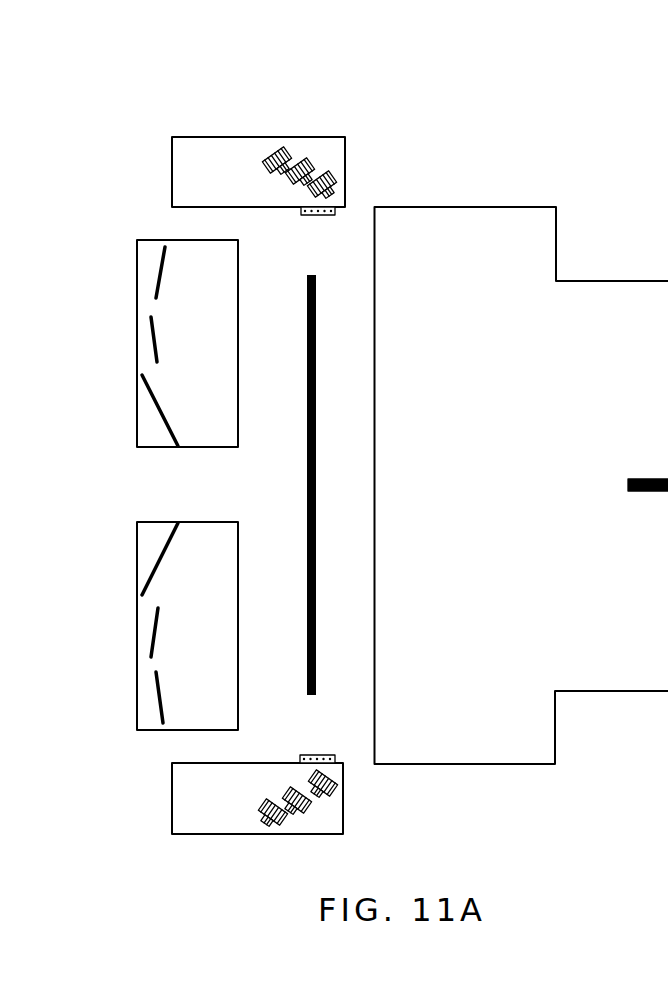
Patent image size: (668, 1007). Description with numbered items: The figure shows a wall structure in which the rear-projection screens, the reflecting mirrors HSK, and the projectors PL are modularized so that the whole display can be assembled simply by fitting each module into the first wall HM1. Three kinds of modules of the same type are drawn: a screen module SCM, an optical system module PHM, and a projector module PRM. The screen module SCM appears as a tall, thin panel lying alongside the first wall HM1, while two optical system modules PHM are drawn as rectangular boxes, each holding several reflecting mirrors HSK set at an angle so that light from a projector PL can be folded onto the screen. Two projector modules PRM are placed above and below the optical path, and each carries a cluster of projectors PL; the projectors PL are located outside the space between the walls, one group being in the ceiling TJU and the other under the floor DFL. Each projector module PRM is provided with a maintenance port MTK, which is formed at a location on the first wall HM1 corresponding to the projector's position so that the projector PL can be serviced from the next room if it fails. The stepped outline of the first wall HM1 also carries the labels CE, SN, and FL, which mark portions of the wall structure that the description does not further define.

The projector module PRM is at (212, 137).
The projector PL is at (311, 156).
The maintenance port MTK is at (320, 228).
The first wall HM1 is at (375, 549).
The ceiling TJU is at (498, 247).
The edge CE is at (612, 281).
The sensor SN is at (631, 400).
The optical system module PHM is at (157, 448).
The reflecting mirror HSK is at (162, 267).
The screen module SCM is at (308, 638).
The flap FL is at (615, 691).
The under the floor DFL is at (478, 734).